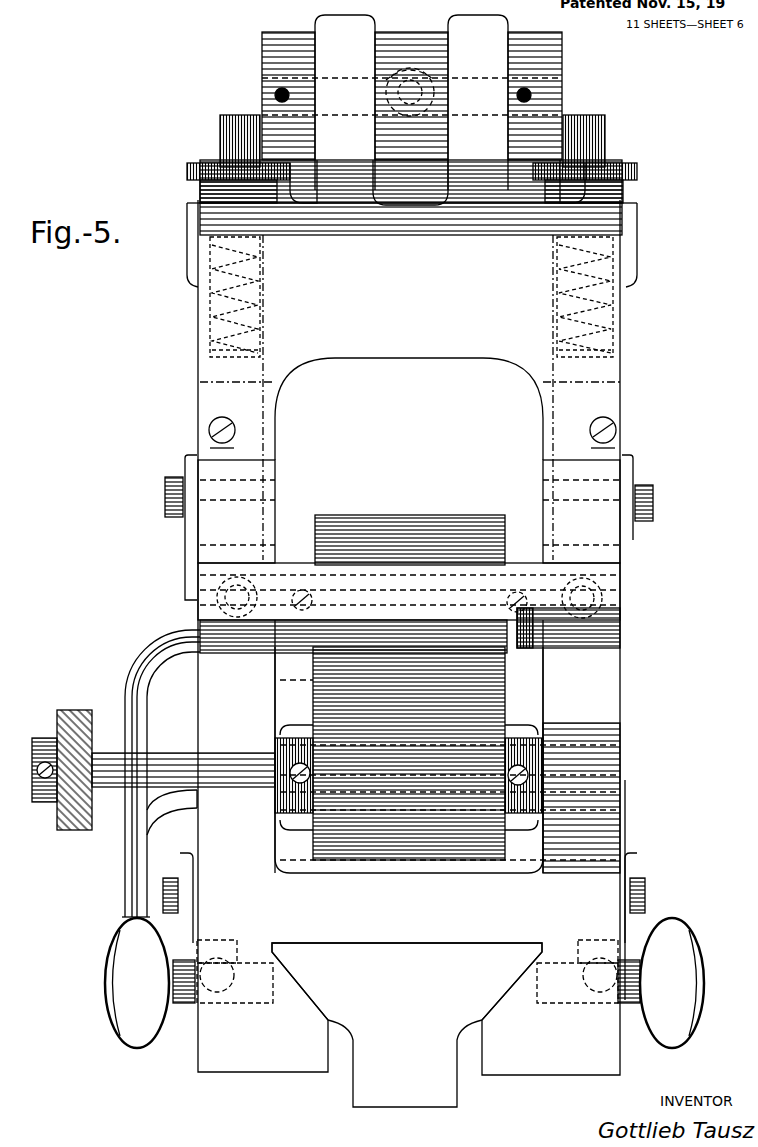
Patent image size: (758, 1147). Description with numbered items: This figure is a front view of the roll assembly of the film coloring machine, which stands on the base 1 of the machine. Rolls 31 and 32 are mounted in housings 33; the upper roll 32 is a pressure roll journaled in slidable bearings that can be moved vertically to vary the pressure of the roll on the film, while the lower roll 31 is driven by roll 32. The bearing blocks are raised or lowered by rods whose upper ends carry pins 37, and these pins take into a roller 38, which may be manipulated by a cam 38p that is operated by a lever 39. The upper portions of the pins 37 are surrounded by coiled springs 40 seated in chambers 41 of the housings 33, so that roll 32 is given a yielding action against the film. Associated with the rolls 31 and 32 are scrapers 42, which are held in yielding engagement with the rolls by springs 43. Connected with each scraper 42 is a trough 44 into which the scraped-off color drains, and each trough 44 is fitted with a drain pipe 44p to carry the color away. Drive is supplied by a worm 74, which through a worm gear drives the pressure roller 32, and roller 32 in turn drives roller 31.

The base 1 is at (393, 1077).
The roll 31 is at (472, 736).
The roll 32 is at (403, 528).
The housing 33 is at (258, 1095).
The pin 37 is at (258, 125).
The roller 38 is at (410, 140).
The cam 38p is at (278, 62).
The lever 39 is at (410, 72).
The coiled spring 40 is at (215, 304).
The chamber 41 is at (215, 333).
The scraper 42 is at (218, 573).
The spring 43 is at (188, 517).
The trough 44 is at (196, 629).
The drain pipe 44p is at (135, 802).
The worm 74 is at (70, 715).